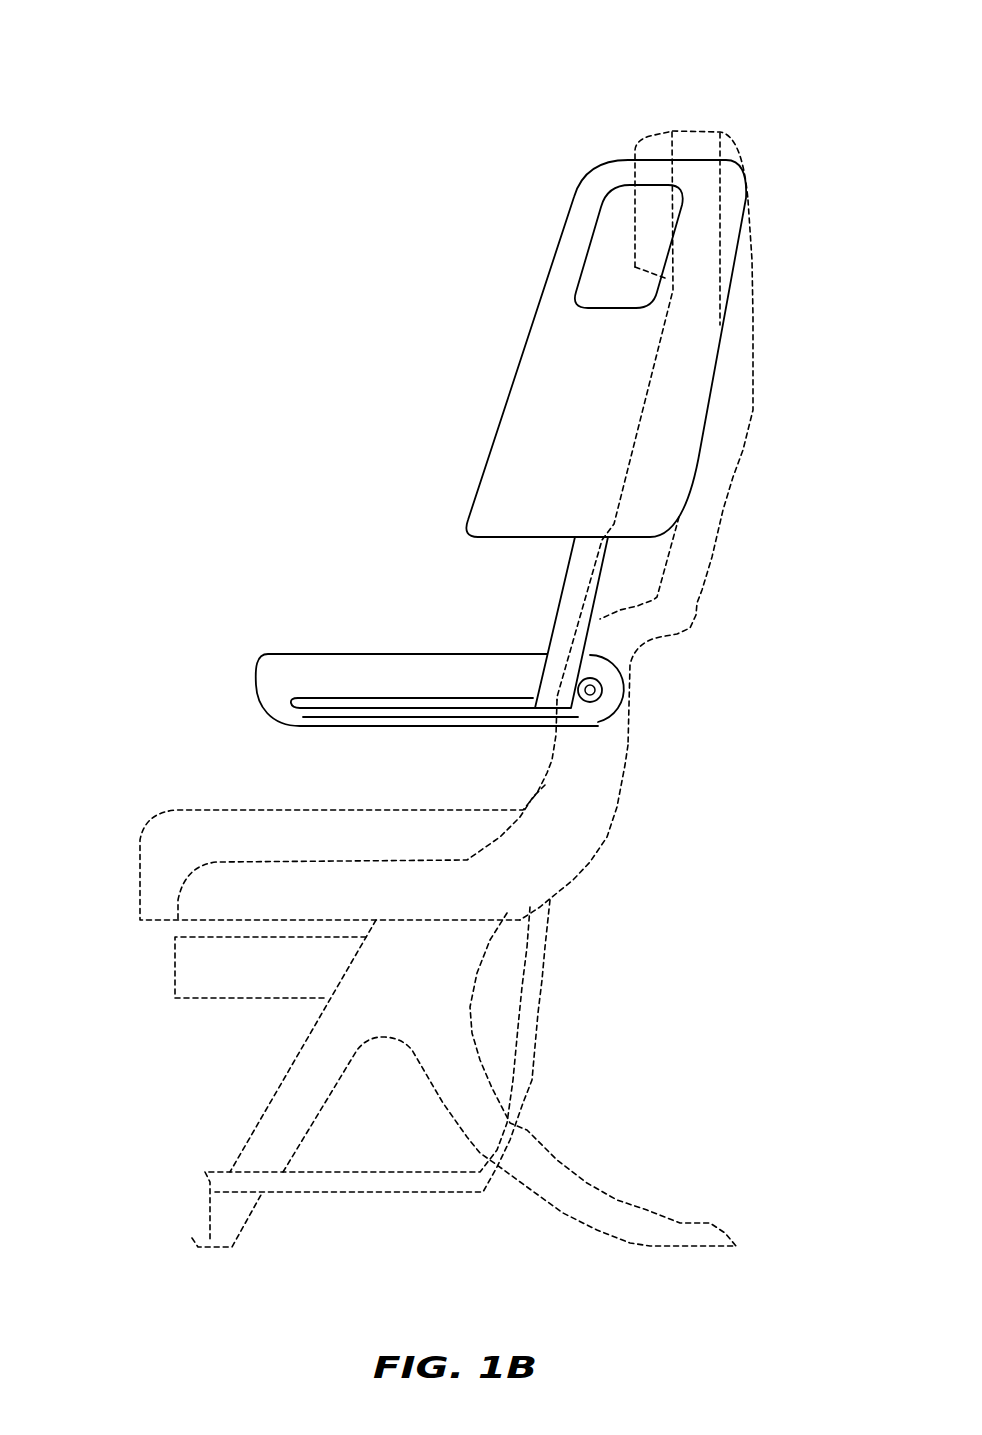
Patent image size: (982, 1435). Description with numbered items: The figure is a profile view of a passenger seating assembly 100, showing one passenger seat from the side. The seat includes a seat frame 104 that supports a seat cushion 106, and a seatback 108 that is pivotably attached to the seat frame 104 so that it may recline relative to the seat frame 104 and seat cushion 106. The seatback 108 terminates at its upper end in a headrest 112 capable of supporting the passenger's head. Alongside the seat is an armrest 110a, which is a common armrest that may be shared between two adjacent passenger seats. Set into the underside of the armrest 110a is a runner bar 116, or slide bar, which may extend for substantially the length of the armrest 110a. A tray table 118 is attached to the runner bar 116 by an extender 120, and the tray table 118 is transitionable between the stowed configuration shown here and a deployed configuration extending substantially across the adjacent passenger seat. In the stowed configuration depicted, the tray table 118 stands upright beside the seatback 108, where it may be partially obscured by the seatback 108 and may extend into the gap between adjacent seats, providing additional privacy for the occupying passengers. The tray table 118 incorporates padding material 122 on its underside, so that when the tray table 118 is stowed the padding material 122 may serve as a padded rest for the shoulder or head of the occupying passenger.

The passenger seating assembly 100 is at (97, 72).
The seat frame 104 is at (574, 801).
The seat cushion 106 is at (187, 840).
The seatback 108 is at (713, 435).
The armrest 110a is at (287, 671).
The headrest 112 is at (653, 158).
The runner bar 116 is at (340, 699).
The tray table 118 is at (500, 463).
The extender 120 is at (545, 697).
The padding material 122 is at (613, 278).